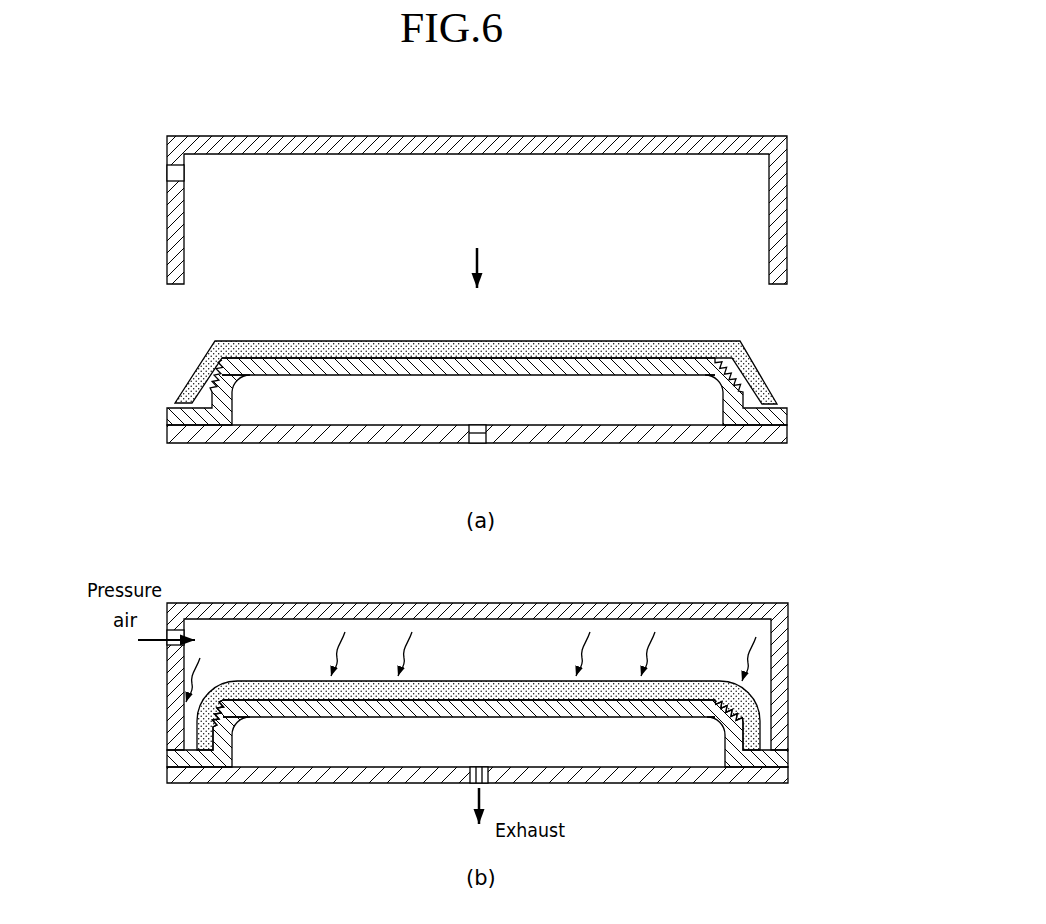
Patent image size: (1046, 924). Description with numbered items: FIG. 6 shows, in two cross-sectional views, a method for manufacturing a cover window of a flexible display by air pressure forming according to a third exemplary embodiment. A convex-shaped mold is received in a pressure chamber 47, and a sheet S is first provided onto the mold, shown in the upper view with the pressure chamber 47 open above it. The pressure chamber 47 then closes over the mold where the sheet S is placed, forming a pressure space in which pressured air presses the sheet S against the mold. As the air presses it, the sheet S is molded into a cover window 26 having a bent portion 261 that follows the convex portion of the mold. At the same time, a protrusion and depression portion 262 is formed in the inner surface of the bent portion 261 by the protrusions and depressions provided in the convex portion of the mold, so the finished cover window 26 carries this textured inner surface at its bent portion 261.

The pressure chamber 47 is at (694, 146).
The sheet S is at (603, 339).
The cover window 26 is at (494, 678).
The bent portion 261 is at (211, 690).
The protrusion and depression portion 262 is at (232, 713).